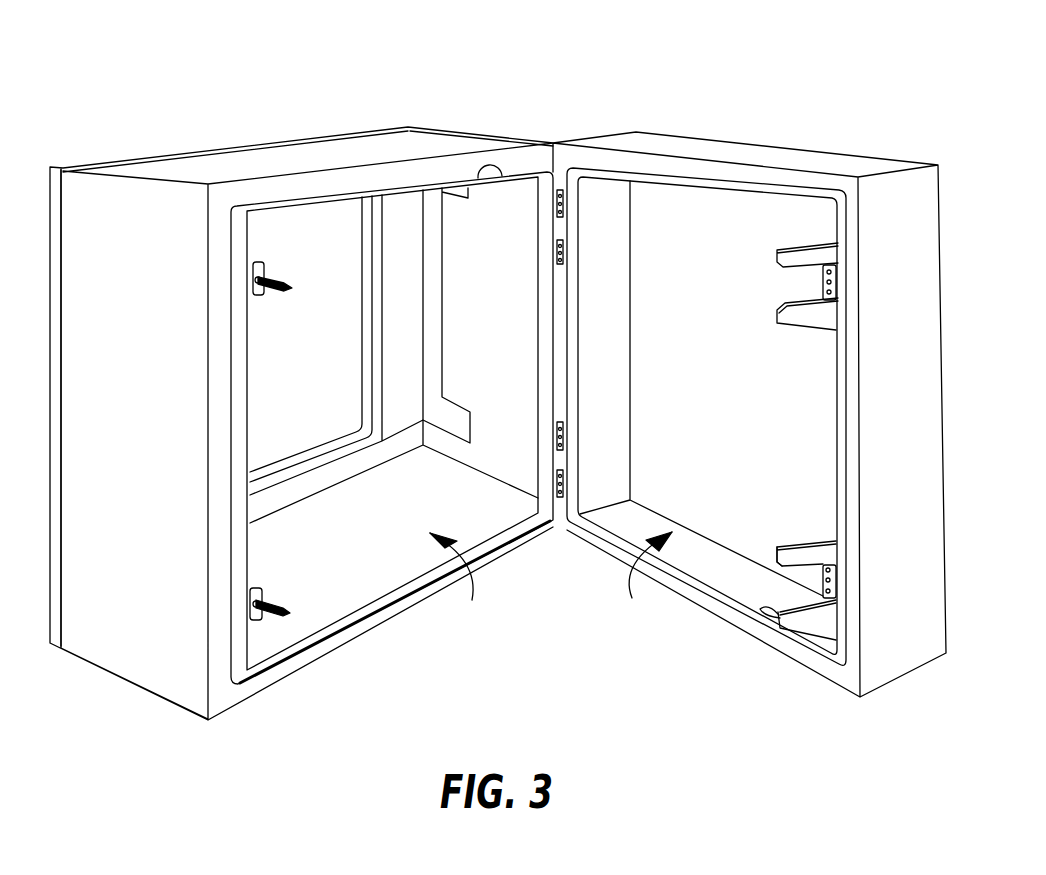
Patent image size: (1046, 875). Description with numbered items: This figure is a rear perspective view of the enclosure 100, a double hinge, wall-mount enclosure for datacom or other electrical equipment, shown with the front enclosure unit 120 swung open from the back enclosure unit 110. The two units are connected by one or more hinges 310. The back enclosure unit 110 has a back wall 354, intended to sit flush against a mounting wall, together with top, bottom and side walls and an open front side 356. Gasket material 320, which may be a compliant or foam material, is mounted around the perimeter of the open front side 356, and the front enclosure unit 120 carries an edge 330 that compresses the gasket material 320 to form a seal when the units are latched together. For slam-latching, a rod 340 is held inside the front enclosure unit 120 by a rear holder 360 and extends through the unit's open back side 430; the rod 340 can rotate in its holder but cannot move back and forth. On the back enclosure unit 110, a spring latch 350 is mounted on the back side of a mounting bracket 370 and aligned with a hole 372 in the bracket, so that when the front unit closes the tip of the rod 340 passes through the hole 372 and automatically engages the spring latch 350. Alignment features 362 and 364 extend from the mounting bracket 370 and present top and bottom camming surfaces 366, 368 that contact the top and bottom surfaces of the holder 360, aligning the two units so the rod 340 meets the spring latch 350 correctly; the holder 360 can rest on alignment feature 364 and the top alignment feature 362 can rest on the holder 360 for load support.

The enclosure 100 is at (437, 143).
The back enclosure unit 110 is at (760, 158).
The front enclosure unit 120 is at (145, 658).
The hinges 310 is at (563, 216).
The gasket material 320 is at (723, 188).
The edge 330 is at (507, 175).
The rod 340 is at (270, 598).
The spring latch 350 is at (831, 570).
The back wall 354 is at (774, 286).
The open front side 356 is at (645, 580).
The rear holder 360 is at (260, 585).
The top alignment feature 362 is at (815, 548).
The bottom alignment feature 364 is at (802, 620).
The top camming surface 366 is at (777, 565).
The bottom camming surface 368 is at (758, 616).
The mounting bracket 370 is at (833, 595).
The hole 372 is at (833, 583).
The open back side 430 is at (459, 582).